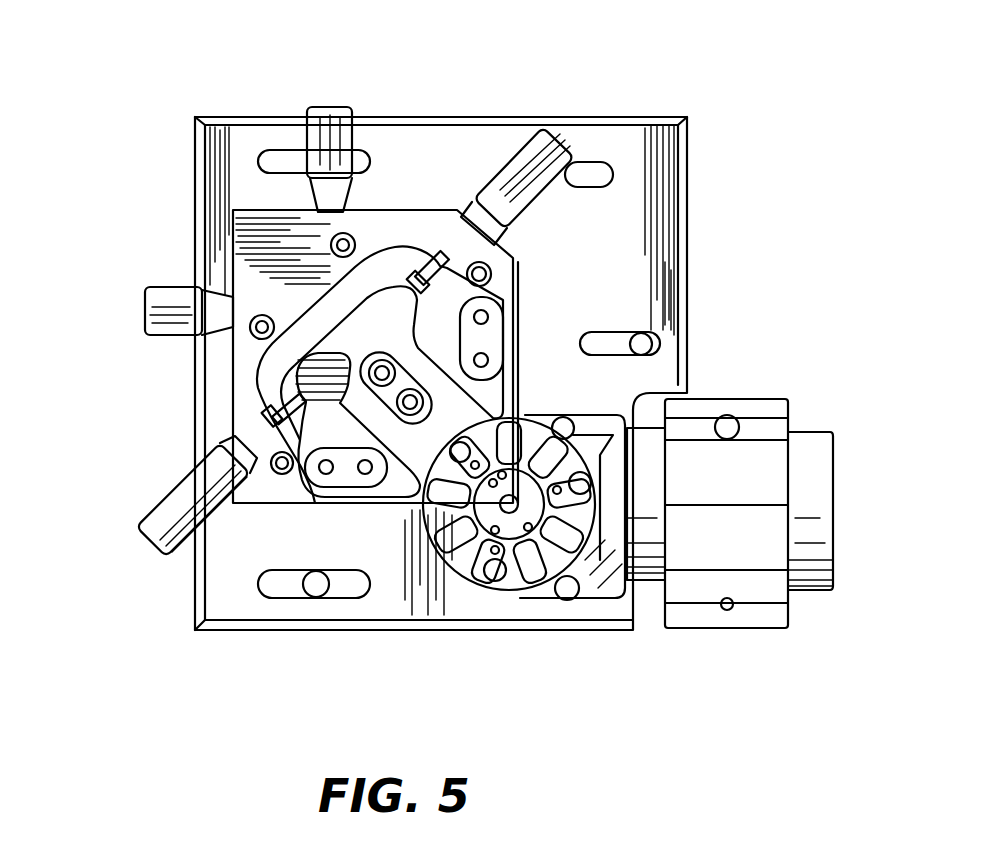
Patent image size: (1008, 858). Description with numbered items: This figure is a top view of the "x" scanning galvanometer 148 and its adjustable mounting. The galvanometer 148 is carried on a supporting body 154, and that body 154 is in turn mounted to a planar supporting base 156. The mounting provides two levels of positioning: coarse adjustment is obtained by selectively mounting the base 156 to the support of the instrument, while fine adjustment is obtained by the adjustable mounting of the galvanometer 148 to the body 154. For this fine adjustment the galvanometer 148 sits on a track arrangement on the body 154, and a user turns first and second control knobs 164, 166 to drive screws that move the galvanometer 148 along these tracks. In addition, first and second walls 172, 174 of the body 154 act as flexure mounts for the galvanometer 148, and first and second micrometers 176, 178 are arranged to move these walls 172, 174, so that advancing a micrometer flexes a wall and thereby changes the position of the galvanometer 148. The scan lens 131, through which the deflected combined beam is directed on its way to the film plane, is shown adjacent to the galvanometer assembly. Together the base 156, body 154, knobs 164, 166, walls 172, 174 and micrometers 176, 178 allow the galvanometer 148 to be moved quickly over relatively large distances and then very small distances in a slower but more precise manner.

The scan lens 131 is at (752, 481).
The "x" scanning galvanometer 148 is at (88, 560).
The supporting body 154 is at (245, 258).
The planar supporting base 156 is at (650, 200).
The first control knob 164 is at (150, 354).
The second control knob 166 is at (385, 165).
The first wall 172 is at (515, 288).
The second wall 174 is at (330, 483).
The first micrometer 176 is at (540, 135).
The second micrometer 178 is at (187, 494).